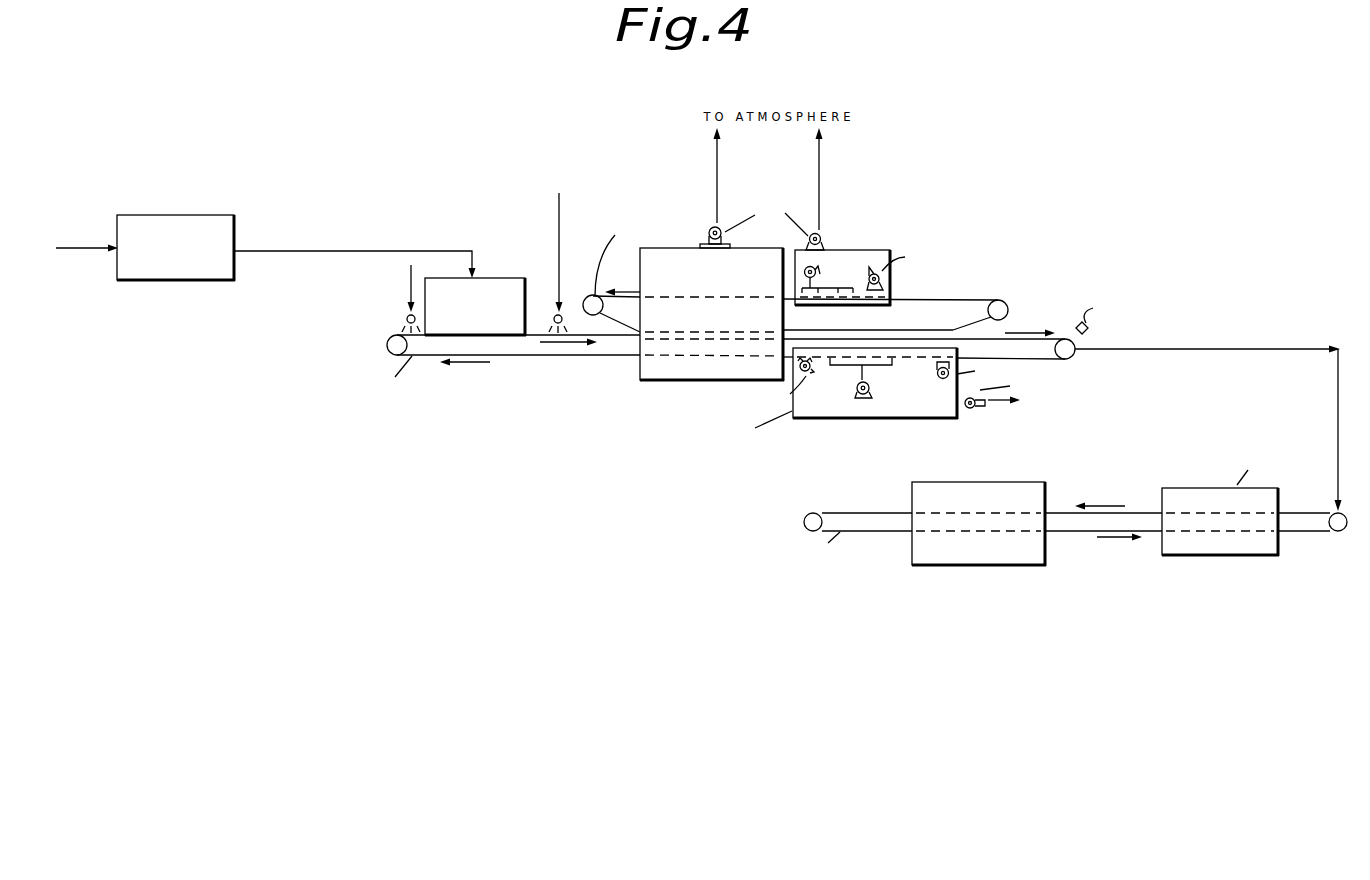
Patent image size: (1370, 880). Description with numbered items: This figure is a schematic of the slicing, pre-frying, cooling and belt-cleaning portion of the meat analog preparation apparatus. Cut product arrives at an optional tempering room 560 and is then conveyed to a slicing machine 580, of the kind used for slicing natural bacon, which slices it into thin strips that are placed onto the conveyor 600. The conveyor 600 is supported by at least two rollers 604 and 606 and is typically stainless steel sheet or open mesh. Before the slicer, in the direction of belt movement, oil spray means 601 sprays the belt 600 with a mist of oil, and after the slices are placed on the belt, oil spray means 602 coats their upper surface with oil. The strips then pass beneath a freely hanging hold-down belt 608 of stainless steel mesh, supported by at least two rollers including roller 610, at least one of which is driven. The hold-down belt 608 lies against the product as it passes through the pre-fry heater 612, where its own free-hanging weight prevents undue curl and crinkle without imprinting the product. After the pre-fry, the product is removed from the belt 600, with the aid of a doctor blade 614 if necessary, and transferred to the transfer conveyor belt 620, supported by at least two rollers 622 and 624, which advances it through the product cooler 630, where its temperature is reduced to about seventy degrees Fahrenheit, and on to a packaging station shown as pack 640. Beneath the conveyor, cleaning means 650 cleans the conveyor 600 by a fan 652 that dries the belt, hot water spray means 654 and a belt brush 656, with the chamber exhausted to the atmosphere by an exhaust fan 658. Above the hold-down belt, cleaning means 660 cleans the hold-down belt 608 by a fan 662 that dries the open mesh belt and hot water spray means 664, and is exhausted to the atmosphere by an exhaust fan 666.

The tempering room 560 is at (194, 215).
The slicing machine 580 is at (490, 278).
The conveyor 600 is at (399, 334).
The oil spray means 601 is at (408, 277).
The oil spray means 602 is at (553, 316).
The roller 604 is at (388, 347).
The roller 606 is at (1080, 357).
The hold-down belt 608 is at (985, 301).
The roller 610 is at (583, 300).
The pre-fry heater 612 is at (731, 378).
The doctor blade 614 is at (1079, 324).
The transfer conveyor belt 620 is at (883, 532).
The roller 622 is at (806, 514).
The roller 624 is at (1338, 531).
The product cooler 630 is at (1215, 546).
The packing station 640 is at (1001, 554).
The cleaning means 650 is at (836, 418).
The fan 652 is at (946, 381).
The hot water spray means 654 is at (872, 386).
The belt brush 656 is at (812, 374).
The exhaust fan 658 is at (974, 412).
The cleaning means 660 is at (845, 249).
The fan 662 is at (868, 270).
The hot water spray means 664 is at (830, 278).
The exhaust fan 666 is at (823, 232).